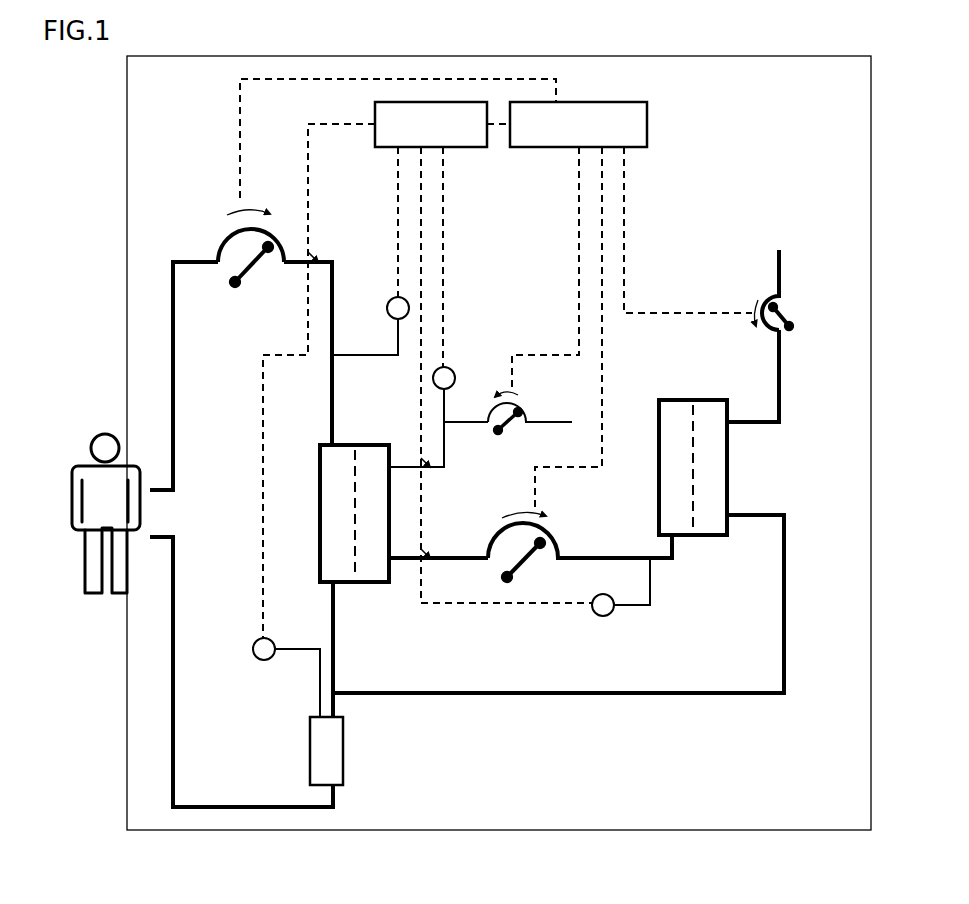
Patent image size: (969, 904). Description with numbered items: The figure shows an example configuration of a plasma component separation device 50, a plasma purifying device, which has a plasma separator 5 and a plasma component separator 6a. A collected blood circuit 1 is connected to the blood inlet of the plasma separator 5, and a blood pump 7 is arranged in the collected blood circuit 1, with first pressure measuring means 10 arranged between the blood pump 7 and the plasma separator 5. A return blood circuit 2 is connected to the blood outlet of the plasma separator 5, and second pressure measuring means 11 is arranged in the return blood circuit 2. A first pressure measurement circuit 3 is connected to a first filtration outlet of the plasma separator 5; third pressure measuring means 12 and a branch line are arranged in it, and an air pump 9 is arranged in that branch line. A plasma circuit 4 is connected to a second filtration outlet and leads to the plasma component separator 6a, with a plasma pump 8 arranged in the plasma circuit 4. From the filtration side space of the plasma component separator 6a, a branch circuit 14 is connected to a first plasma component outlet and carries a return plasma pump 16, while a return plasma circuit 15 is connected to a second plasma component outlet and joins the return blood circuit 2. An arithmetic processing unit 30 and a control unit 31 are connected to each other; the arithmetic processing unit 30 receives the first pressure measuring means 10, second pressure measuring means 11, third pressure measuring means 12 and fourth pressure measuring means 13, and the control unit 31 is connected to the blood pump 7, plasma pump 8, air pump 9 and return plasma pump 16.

The collected blood circuit 1 is at (180, 380).
The return blood circuit 2 is at (178, 745).
The first pressure measurement circuit 3 is at (452, 457).
The plasma circuit 4 is at (465, 560).
The plasma separator 5 is at (313, 500).
The plasma component separator 6a is at (655, 455).
The blood pump 7 is at (217, 245).
The plasma pump 8 is at (560, 542).
The air pump 9 is at (523, 412).
The first pressure measuring means 10 is at (387, 298).
The second pressure measuring means 11 is at (253, 658).
The third pressure measuring means 12 is at (462, 373).
The fourth pressure measuring means 13 is at (592, 615).
The branch circuit 14 is at (788, 388).
The return plasma circuit 15 is at (788, 572).
The return plasma pump 16 is at (793, 310).
The arithmetic processing unit 30 is at (473, 147).
The control unit 31 is at (625, 147).
The plasma component separation device 50 is at (422, 830).